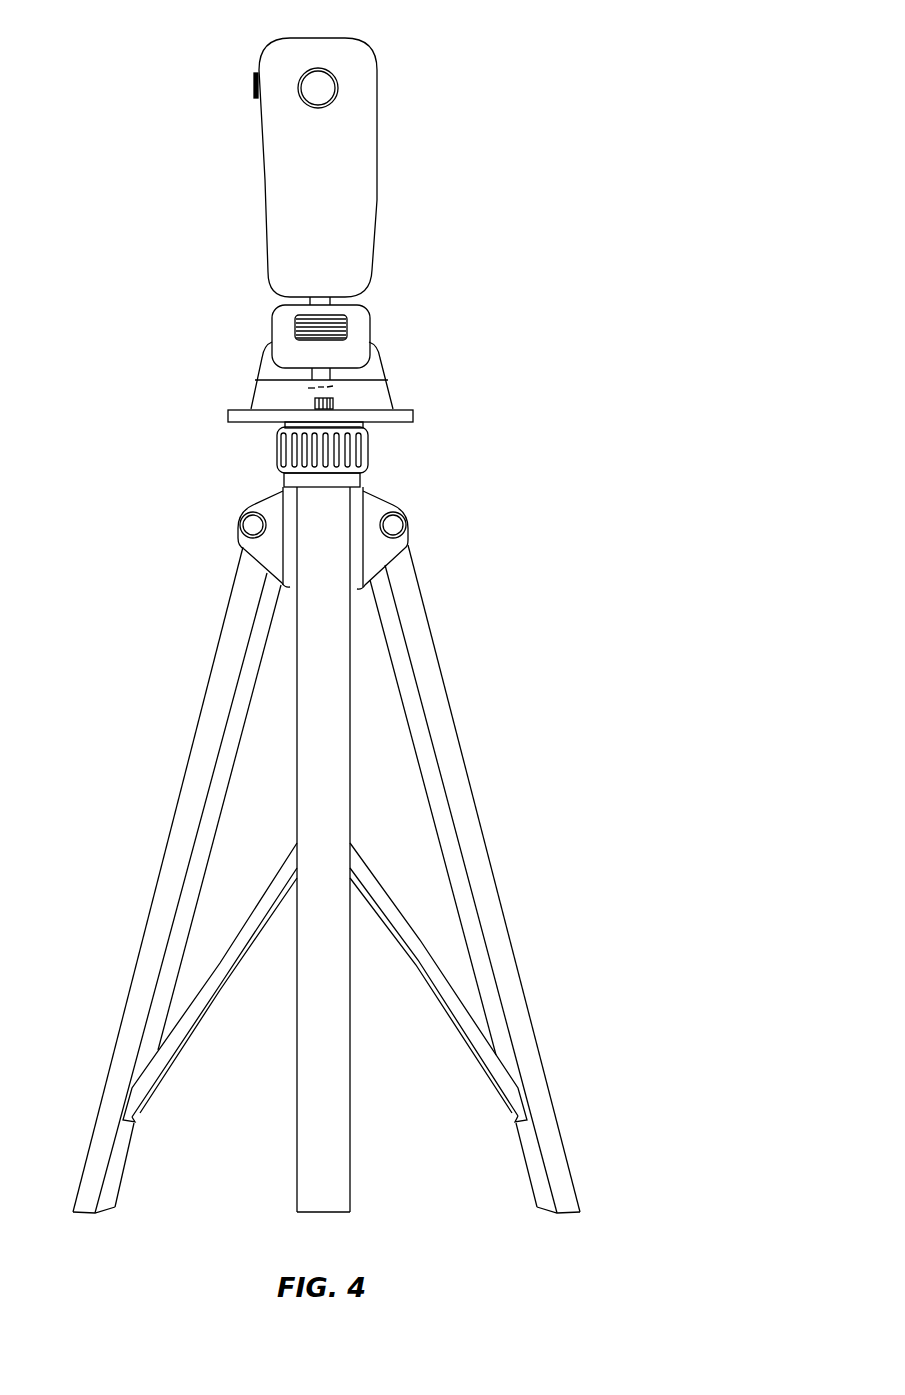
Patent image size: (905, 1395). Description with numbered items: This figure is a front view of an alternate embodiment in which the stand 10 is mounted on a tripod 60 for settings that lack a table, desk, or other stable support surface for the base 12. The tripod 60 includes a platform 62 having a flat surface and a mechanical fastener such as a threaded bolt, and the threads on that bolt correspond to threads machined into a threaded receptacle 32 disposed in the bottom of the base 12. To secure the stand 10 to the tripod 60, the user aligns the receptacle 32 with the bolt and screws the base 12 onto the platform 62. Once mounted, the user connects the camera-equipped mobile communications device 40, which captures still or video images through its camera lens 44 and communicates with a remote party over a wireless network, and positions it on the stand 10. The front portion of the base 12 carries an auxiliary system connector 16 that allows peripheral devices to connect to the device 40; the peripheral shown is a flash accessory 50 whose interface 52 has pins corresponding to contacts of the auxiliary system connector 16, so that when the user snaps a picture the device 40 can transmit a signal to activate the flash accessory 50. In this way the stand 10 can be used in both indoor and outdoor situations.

The stand 10 is at (300, 387).
The base 12 is at (262, 360).
The auxiliary system connector 16 is at (312, 388).
The threaded receptacle 32 is at (330, 400).
The mobile communications device 40 is at (335, 158).
The camera lens 44 is at (313, 82).
The flash accessory 50 is at (357, 325).
The interface 52 is at (323, 377).
The tripod 60 is at (493, 615).
The platform 62 is at (387, 422).